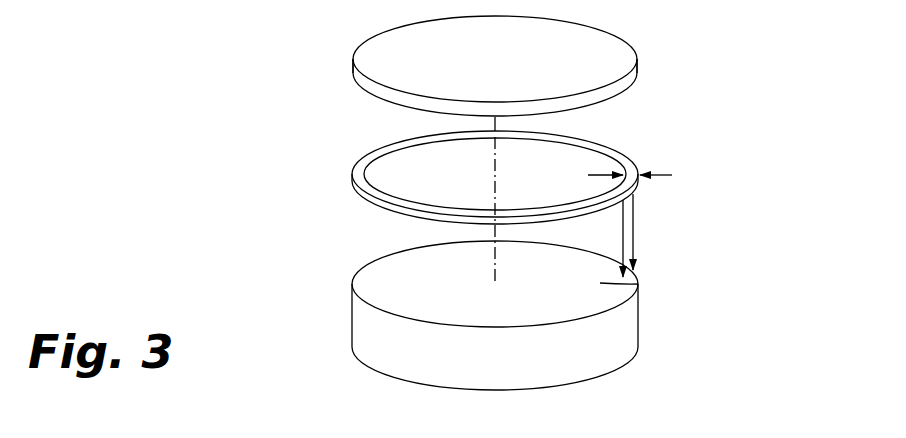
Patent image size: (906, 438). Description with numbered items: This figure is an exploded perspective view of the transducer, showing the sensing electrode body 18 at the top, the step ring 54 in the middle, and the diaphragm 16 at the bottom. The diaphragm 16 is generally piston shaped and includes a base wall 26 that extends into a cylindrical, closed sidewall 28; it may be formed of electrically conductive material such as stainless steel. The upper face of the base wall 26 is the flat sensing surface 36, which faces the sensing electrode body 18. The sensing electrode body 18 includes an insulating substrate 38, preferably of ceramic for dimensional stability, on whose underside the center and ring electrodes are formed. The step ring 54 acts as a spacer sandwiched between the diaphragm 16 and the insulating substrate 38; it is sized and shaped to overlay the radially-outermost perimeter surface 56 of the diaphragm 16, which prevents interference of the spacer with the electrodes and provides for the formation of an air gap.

The diaphragm 16 is at (497, 315).
The sensing electrode body 18 is at (487, 66).
The base wall 26 is at (620, 291).
The closed sidewall 28 is at (639, 333).
The sensing surface 36 is at (538, 295).
The insulating substrate 38 is at (637, 66).
The step ring 54 is at (342, 173).
The radially-outermost perimeter surface 56 is at (634, 237).